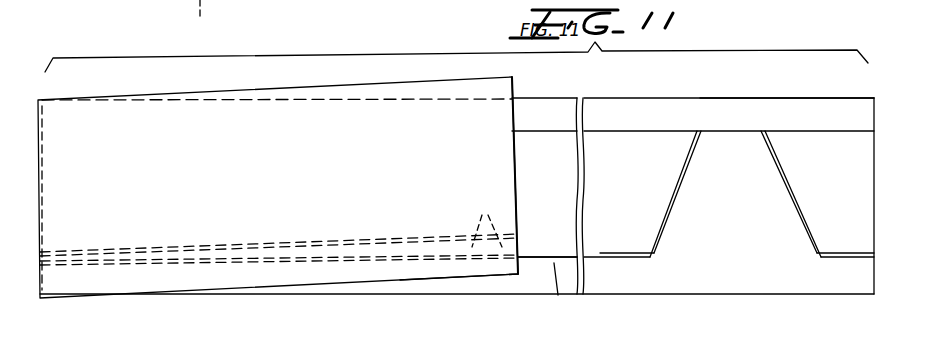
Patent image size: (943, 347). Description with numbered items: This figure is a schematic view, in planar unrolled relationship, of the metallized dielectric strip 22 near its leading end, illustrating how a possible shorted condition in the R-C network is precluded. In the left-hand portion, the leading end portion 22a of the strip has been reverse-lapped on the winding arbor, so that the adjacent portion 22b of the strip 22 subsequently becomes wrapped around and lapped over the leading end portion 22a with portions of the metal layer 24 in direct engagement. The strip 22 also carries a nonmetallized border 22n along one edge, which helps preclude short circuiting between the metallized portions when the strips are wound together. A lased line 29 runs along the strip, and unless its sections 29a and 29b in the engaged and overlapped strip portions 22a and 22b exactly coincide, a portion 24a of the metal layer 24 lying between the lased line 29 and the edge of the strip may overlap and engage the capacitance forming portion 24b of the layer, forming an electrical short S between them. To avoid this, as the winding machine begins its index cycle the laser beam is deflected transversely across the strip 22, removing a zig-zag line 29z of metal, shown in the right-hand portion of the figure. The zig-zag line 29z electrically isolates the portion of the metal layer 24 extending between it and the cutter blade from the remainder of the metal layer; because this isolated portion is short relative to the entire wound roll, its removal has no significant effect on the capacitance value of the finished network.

The metallized dielectric strip 22 is at (715, 294).
The leading end portion 22a is at (480, 113).
The adjacent portion 22b is at (342, 100).
The nonmetallized border 22n is at (662, 113).
The metal layer 24 is at (797, 143).
The portion of the metal layer 24a is at (521, 244).
The capacitance forming portion 24b is at (488, 245).
The lased line 29 is at (612, 258).
The section of the lased line 29a is at (412, 237).
The section of the lased line 29b is at (378, 263).
The zig-zag line 29z is at (773, 157).
The electrical short S is at (487, 221).